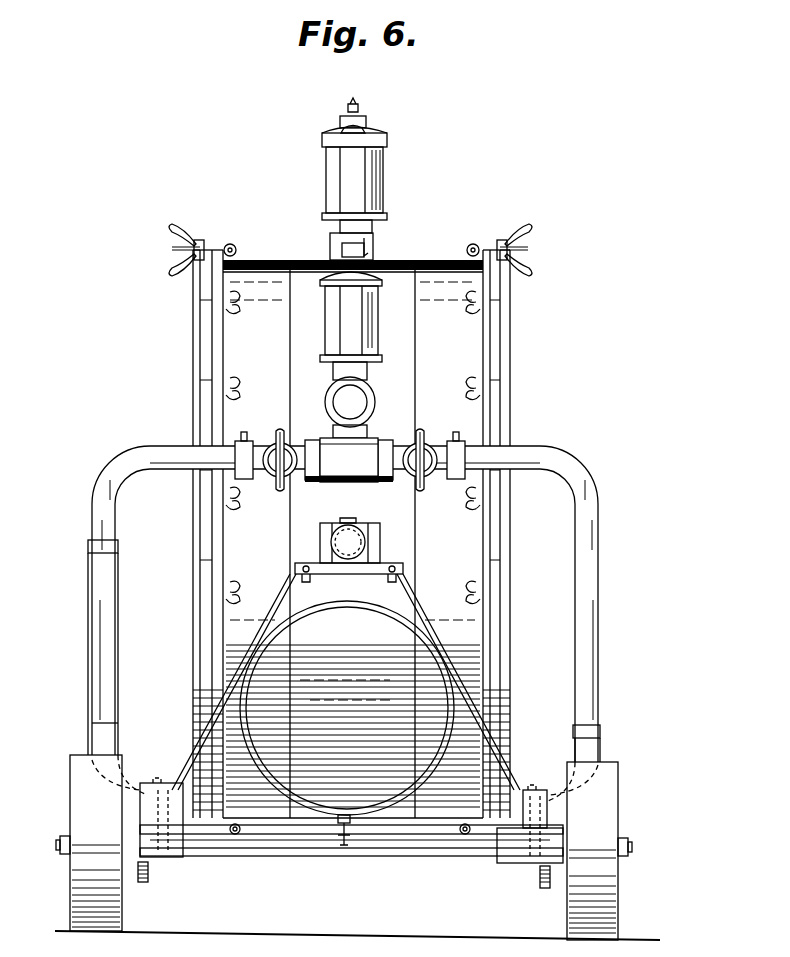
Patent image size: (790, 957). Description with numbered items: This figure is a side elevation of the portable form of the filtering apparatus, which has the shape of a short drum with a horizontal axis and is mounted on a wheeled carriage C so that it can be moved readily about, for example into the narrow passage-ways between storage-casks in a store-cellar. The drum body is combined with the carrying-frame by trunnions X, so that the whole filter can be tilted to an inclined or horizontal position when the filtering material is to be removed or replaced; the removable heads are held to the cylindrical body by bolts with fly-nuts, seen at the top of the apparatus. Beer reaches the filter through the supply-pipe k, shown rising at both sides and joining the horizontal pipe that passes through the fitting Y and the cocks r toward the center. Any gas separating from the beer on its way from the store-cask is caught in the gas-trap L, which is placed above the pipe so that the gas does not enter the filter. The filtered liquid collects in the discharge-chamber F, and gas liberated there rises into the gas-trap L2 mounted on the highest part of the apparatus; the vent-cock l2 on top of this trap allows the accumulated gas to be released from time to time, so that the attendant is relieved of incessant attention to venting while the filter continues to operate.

The vent-cock l2 is at (362, 113).
The gas-trap L2 is at (388, 180).
The gas-trap L is at (345, 335).
The T-junction pipe fitting Y is at (360, 482).
The valves r is at (274, 450).
The supply-pipe k is at (130, 522).
The trunnions X is at (360, 535).
The discharge-chamber F is at (175, 857).
The carriage C is at (514, 863).